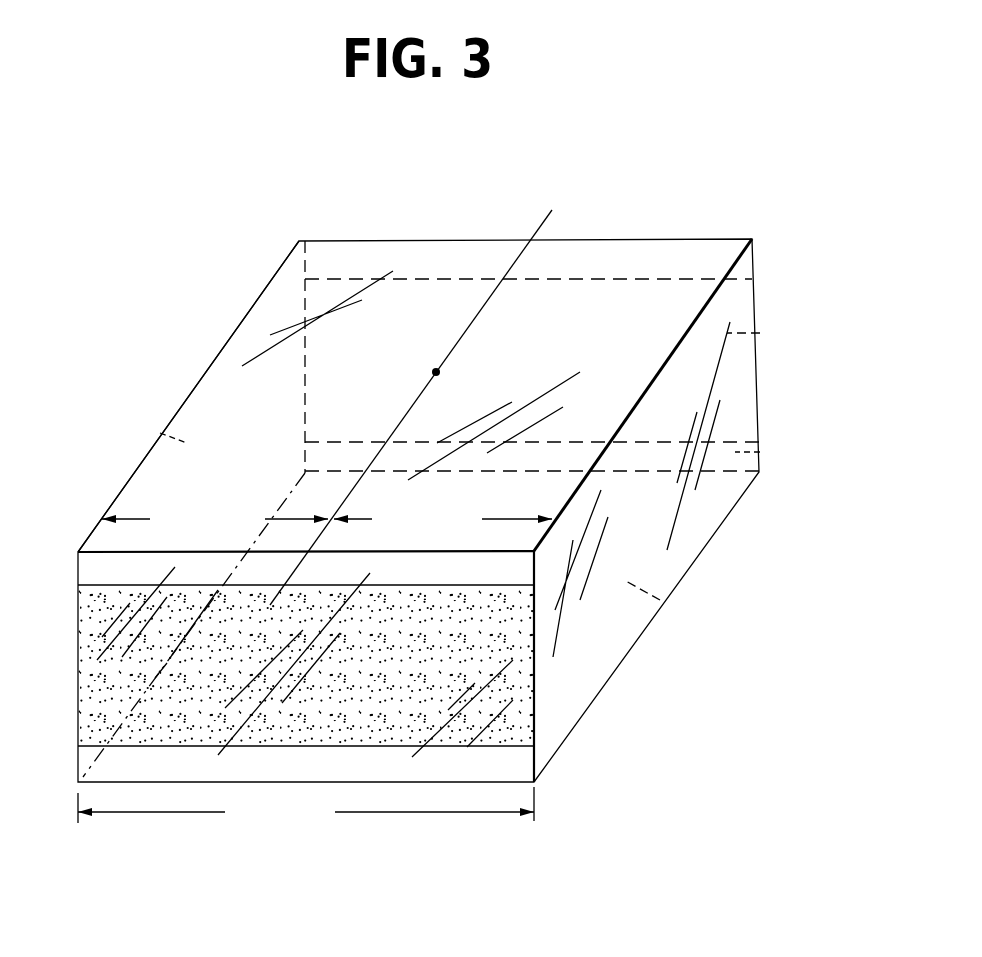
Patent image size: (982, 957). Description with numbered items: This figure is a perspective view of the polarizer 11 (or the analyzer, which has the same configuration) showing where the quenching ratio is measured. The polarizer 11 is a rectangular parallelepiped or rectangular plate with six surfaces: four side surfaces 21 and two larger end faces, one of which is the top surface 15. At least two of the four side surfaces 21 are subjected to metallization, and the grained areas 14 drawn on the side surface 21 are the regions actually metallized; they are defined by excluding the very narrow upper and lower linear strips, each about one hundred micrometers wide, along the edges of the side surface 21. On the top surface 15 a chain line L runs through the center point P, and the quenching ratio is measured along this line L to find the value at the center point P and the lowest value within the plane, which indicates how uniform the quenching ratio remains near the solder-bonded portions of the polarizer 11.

The polarizer 11 is at (702, 560).
The grained areas 14 is at (760, 333).
The top surface 15 is at (672, 258).
The side surfaces 21 is at (160, 433).